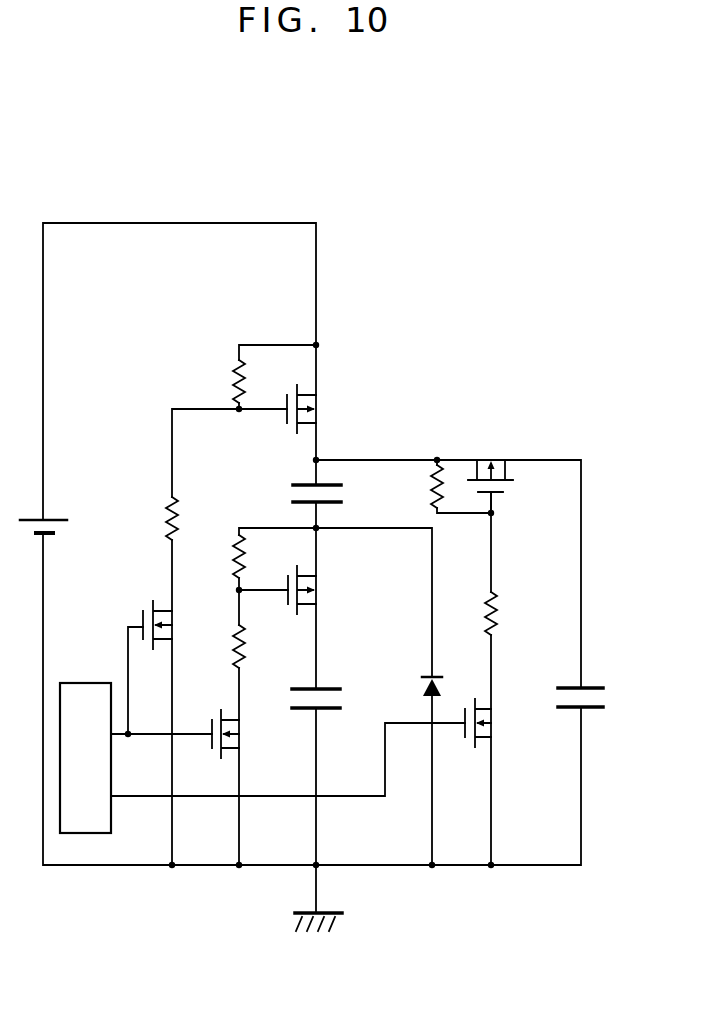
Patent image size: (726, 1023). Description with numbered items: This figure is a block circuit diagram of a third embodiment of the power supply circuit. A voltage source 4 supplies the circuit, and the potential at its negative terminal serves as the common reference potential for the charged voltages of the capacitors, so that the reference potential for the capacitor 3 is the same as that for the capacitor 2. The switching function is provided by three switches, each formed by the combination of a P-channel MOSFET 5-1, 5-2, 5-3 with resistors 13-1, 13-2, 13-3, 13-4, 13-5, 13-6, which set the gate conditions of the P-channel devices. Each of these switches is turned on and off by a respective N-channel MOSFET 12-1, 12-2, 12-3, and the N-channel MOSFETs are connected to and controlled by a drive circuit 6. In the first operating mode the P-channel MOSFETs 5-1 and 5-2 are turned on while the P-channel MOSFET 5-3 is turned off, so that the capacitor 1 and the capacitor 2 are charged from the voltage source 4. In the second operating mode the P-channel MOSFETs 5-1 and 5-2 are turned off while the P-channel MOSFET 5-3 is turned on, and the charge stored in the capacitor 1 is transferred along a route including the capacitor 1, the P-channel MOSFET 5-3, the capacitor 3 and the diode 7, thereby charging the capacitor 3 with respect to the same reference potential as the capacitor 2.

The capacitor 1 is at (290, 493).
The capacitor 2 is at (343, 703).
The capacitor 3 is at (606, 700).
The voltage source 4 is at (56, 534).
The P-channel MOSFET 5-1 is at (319, 412).
The P-channel MOSFET 5-2 is at (320, 593).
The P-channel MOSFET 5-3 is at (494, 460).
The drive circuit 6 is at (84, 683).
The diode 7 is at (445, 681).
The N-channel MOSFET 12-1 is at (175, 624).
The N-channel MOSFET 12-2 is at (241, 733).
The N-channel MOSFET 12-3 is at (493, 722).
The resistor 13-1 is at (232, 371).
The resistor 13-2 is at (233, 546).
The resistor 13-3 is at (430, 481).
The resistor 13-4 is at (165, 500).
The resistor 13-5 is at (271, 647).
The resistor 13-6 is at (497, 614).